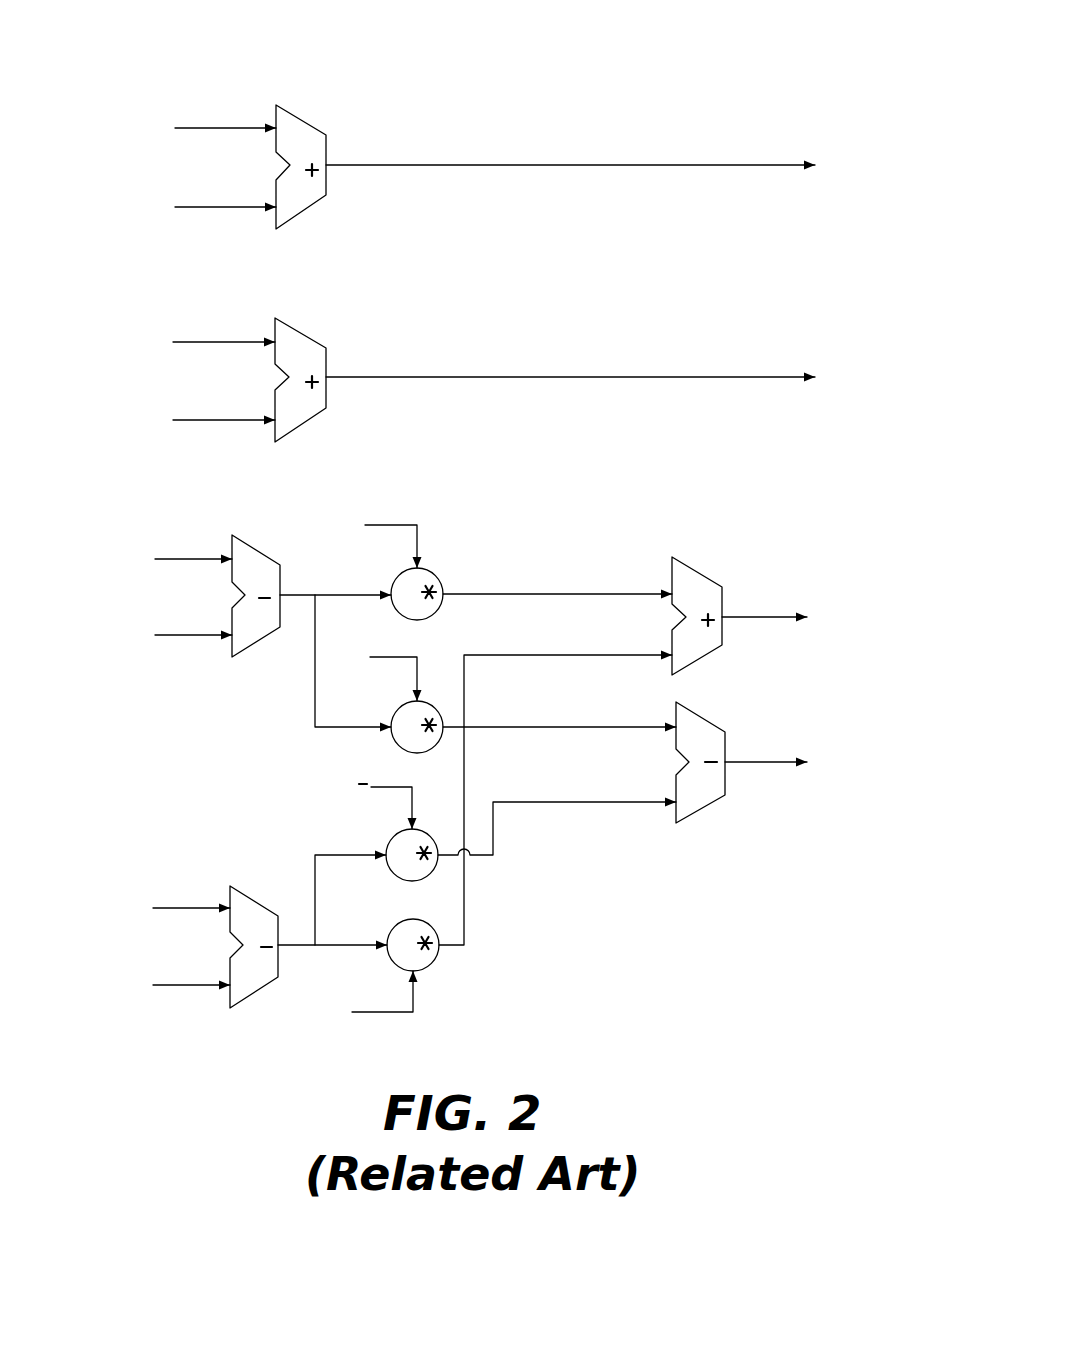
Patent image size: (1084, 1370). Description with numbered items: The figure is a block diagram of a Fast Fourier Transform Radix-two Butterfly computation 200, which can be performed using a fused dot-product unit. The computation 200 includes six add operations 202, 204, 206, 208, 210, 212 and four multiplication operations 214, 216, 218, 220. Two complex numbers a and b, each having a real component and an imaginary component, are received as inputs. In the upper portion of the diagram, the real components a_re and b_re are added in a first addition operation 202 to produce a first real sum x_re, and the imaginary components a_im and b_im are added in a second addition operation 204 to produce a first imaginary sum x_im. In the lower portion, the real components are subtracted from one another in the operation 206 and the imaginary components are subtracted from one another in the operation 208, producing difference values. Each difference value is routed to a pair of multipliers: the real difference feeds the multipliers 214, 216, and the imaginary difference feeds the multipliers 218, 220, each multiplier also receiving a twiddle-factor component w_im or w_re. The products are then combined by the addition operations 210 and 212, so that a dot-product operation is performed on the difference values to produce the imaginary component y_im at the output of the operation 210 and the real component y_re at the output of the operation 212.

The Fast Fourier Transform Radix-2 Butterfly computation 200 is at (163, 42).
The first addition operation 202 is at (298, 115).
The second addition operation 204 is at (298, 330).
The add operation 206 is at (262, 555).
The add operation 208 is at (255, 904).
The addition operation 210 is at (688, 567).
The addition operation 212 is at (702, 715).
The multiplier 214 is at (437, 576).
The multiplier 216 is at (437, 705).
The multiplier 218 is at (385, 845).
The multiplier 220 is at (433, 964).